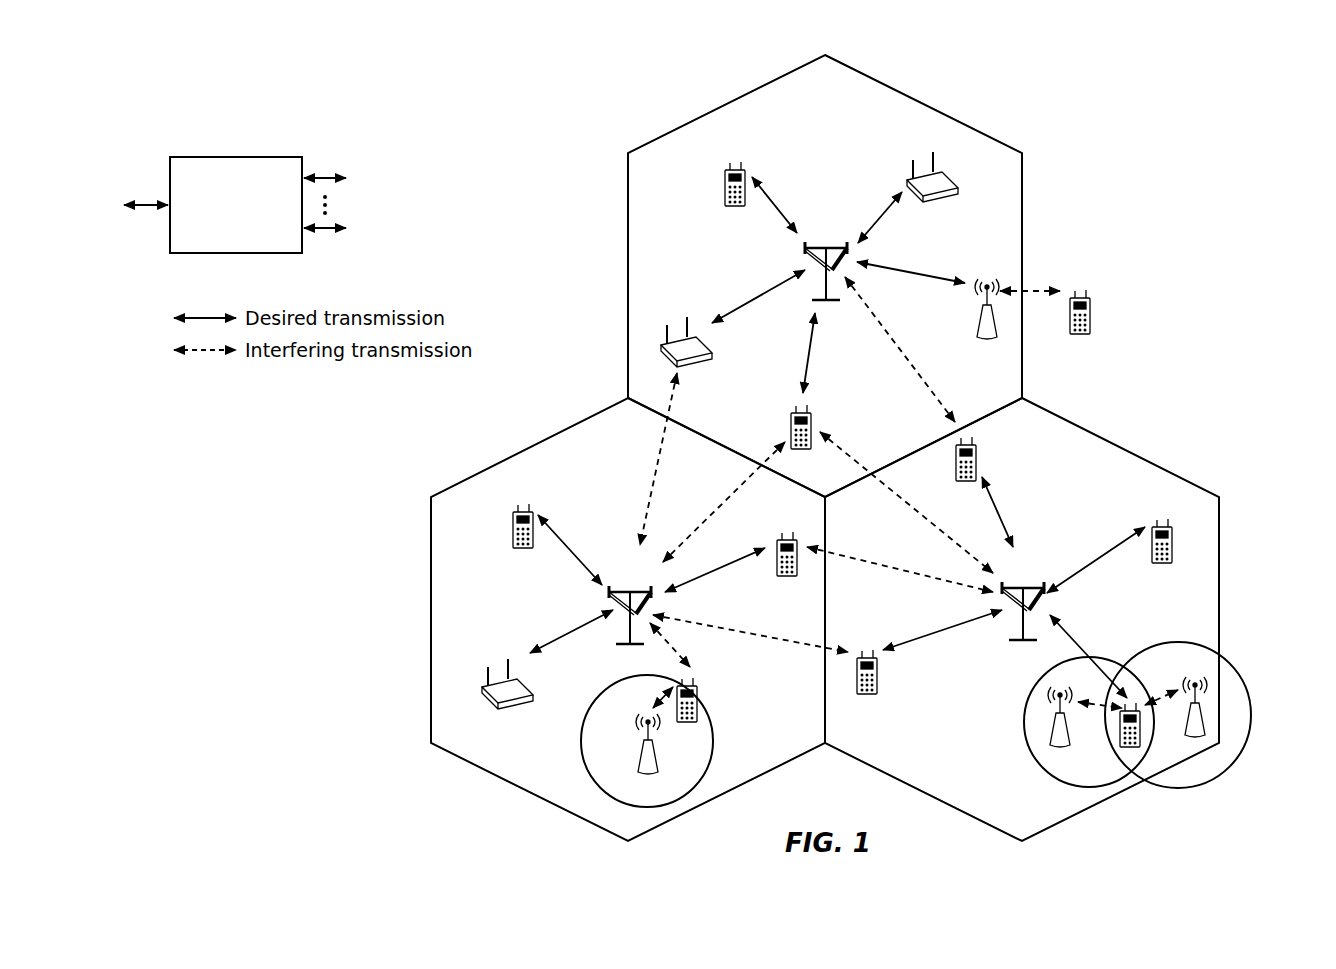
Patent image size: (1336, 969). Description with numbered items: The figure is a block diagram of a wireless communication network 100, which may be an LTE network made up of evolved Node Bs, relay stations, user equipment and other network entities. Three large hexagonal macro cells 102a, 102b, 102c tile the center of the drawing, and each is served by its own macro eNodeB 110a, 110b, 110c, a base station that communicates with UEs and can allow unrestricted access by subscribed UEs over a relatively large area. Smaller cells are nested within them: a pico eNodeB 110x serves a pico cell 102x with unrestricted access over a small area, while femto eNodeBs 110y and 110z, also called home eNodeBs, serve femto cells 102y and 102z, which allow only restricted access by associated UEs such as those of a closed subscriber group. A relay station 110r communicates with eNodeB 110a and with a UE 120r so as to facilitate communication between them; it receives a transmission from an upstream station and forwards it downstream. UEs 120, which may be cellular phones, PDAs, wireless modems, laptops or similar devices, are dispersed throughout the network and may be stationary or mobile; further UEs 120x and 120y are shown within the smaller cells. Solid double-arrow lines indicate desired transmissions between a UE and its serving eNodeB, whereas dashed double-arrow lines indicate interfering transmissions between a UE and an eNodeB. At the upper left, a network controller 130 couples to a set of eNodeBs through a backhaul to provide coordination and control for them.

The wireless communication network 100 is at (1159, 113).
The macro cell 102a is at (921, 103).
The macro cell 102b is at (530, 447).
The macro cell 102c is at (1118, 445).
The pico cell 102x is at (598, 693).
The femto cell 102y is at (1028, 692).
The femto cell 102z is at (1176, 641).
The macro eNodeB 110a is at (819, 247).
The macro eNodeB 110b is at (625, 591).
The macro eNodeB 110c is at (1022, 588).
The relay station 110r is at (974, 324).
The pico eNodeB 110x is at (656, 768).
The femto eNodeB 110y is at (1069, 740).
The femto eNodeB 110z is at (1204, 730).
The UE 120 is at (726, 179).
The UE 120r is at (1090, 325).
The UE in pico cell 120x is at (698, 692).
The UE in femto cell 120y is at (1122, 745).
The network controller 130 is at (236, 157).